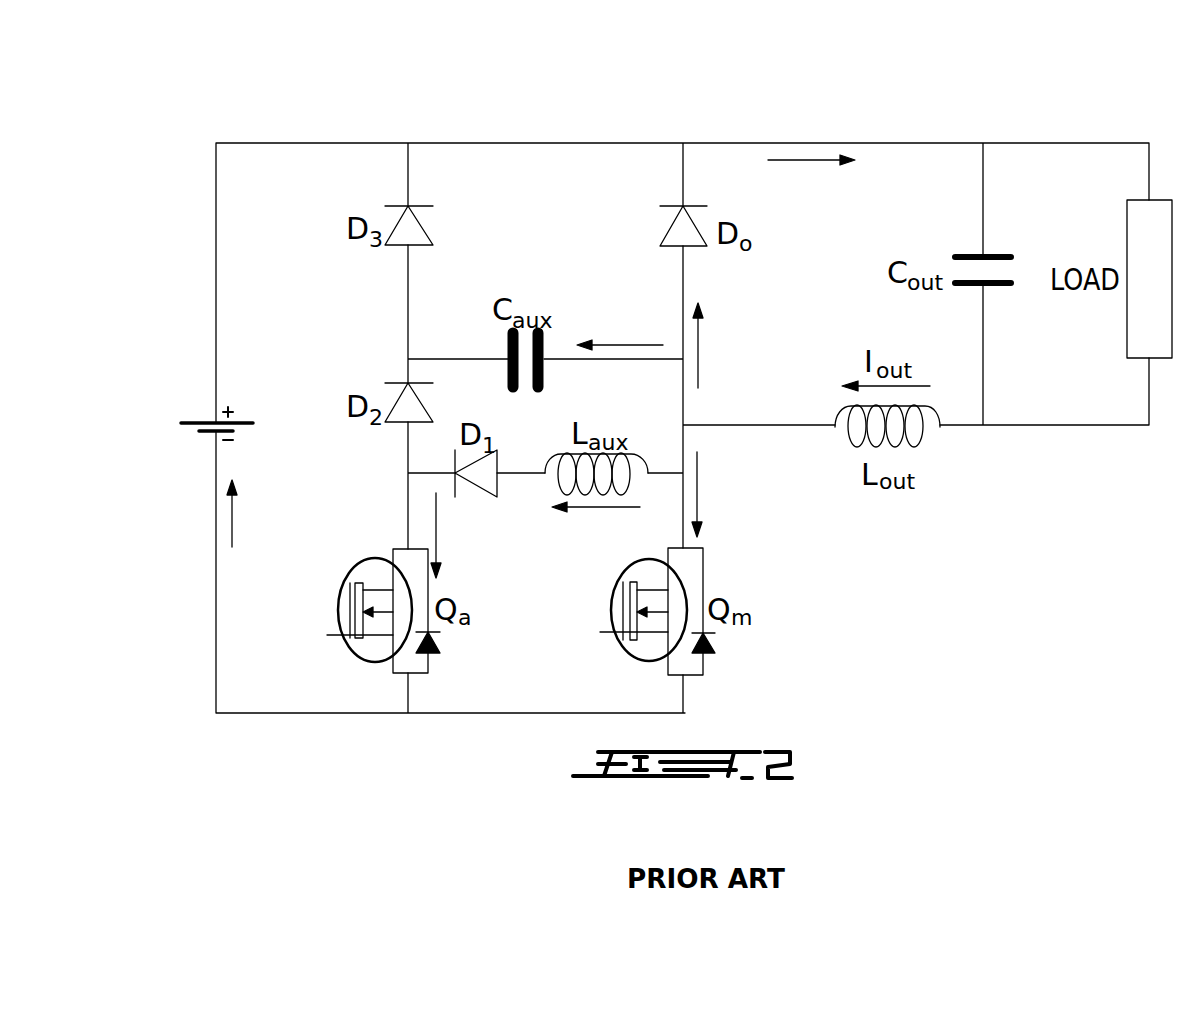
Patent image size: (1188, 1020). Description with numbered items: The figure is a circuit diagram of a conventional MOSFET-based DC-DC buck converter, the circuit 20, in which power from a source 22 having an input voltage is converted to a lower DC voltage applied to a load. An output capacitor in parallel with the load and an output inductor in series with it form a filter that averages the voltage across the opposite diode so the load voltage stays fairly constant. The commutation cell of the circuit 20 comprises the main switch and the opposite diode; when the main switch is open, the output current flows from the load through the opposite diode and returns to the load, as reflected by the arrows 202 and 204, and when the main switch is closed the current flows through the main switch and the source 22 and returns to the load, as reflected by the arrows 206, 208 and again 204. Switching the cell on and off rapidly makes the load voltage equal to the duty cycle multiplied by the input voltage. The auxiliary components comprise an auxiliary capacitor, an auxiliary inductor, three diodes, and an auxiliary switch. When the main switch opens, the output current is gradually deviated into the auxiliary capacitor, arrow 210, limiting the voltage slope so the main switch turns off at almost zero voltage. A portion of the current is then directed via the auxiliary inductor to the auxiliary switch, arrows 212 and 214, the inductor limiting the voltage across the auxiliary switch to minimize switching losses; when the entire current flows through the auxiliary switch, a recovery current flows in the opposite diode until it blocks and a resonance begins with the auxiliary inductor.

The circuit 20 is at (1010, 103).
The source 22 is at (196, 421).
The arrow 202 is at (698, 353).
The arrow 204 is at (800, 162).
The arrow 206 is at (697, 490).
The arrow 208 is at (232, 532).
The arrow 210 is at (627, 345).
The arrow 212 is at (596, 508).
The arrow 214 is at (436, 530).